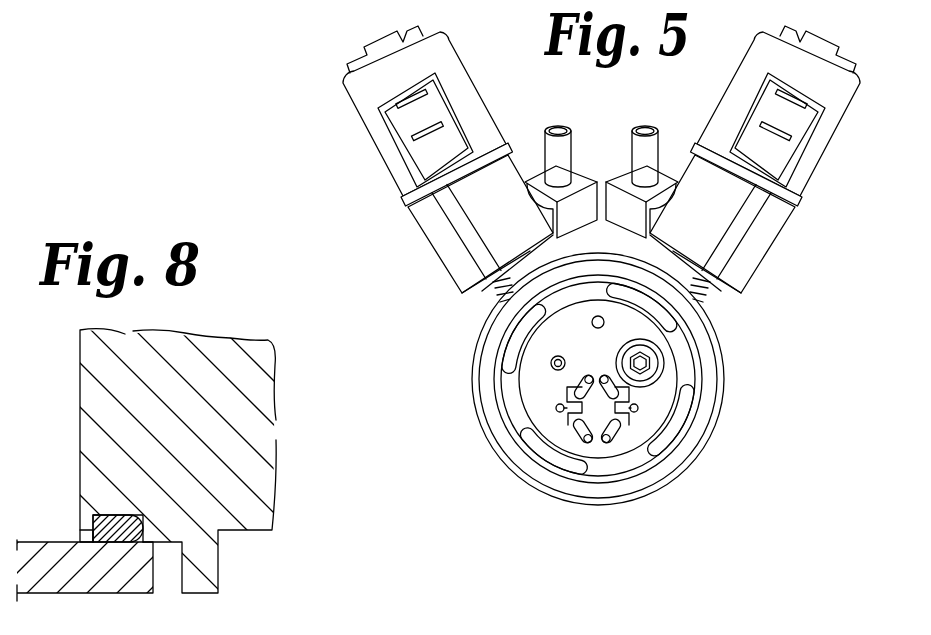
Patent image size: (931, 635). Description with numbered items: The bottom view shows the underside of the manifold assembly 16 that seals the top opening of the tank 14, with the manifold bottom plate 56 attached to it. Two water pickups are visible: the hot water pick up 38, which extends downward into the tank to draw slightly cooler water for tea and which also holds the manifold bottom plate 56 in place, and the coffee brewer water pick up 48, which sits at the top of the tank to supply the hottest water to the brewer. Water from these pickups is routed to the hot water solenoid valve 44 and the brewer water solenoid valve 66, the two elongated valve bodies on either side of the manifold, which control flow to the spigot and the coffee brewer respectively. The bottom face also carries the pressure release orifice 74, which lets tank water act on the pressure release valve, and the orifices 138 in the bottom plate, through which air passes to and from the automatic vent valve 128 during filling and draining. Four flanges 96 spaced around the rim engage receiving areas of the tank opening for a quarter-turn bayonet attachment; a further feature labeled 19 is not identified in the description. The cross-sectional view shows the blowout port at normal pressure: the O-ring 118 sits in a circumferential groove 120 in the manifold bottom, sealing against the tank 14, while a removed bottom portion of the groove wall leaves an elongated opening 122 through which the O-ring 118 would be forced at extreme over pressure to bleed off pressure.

In FIG. 8, the tank 14 is at (77, 578).
In FIG. 8, the manifold assembly 16 is at (207, 358).
In FIG. 5, the housing rim 19 is at (518, 313).
In FIG. 5, the hot water pick up 38 is at (657, 367).
In FIG. 5, the hot water solenoid valve 44 is at (445, 72).
In FIG. 5, the coffee brewer water pick up 48 is at (555, 365).
In FIG. 5, the manifold bottom plate 56 is at (552, 433).
In FIG. 5, the brewer water solenoid valve 66 is at (843, 116).
In FIG. 5, the pressure release orifice 74 is at (590, 325).
In FIG. 5, the flanges 96 is at (662, 313).
In FIG. 8, the O-ring 118 is at (132, 540).
In FIG. 8, the groove 120 is at (98, 513).
In FIG. 5, the groove 120 is at (675, 458).
In FIG. 8, the elongated opening 122 is at (83, 540).
In FIG. 5, the elongated opening 122 is at (720, 388).
In FIG. 5, the automatic vent valve 128 is at (528, 418).
In FIG. 5, the orifices 138 is at (633, 412).